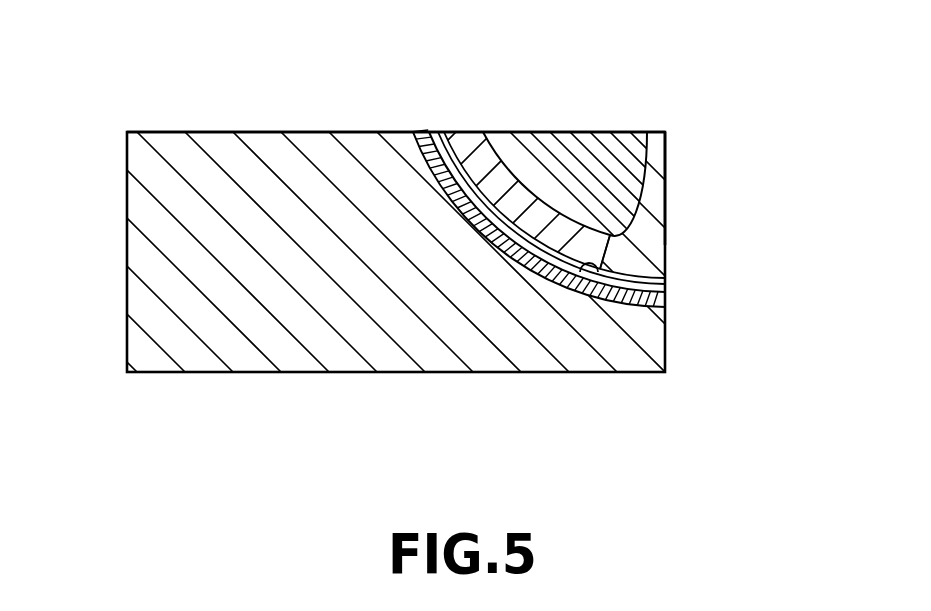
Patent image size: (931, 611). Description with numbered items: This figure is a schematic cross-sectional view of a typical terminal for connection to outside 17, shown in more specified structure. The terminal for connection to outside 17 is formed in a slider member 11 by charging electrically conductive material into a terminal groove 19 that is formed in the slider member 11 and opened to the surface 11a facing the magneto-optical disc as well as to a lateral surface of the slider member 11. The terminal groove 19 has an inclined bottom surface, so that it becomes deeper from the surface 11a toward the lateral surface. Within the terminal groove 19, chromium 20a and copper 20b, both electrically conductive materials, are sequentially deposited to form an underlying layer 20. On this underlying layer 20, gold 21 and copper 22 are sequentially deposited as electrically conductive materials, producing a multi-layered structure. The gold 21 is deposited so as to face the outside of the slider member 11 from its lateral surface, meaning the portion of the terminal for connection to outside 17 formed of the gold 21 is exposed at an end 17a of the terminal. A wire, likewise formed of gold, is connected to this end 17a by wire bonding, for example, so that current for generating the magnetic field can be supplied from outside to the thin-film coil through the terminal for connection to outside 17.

The slider member 11 is at (150, 230).
The surface facing the magneto-optical disc 11a is at (224, 132).
The terminal for connection to outside 17 is at (578, 234).
The end of the terminal for connection to outside 17a is at (665, 165).
The terminal groove 19 is at (603, 275).
The underlying layer 20 is at (635, 240).
The chromium 20a is at (665, 303).
The copper 20b is at (665, 290).
The gold 21 is at (463, 143).
The copper 22 is at (568, 142).